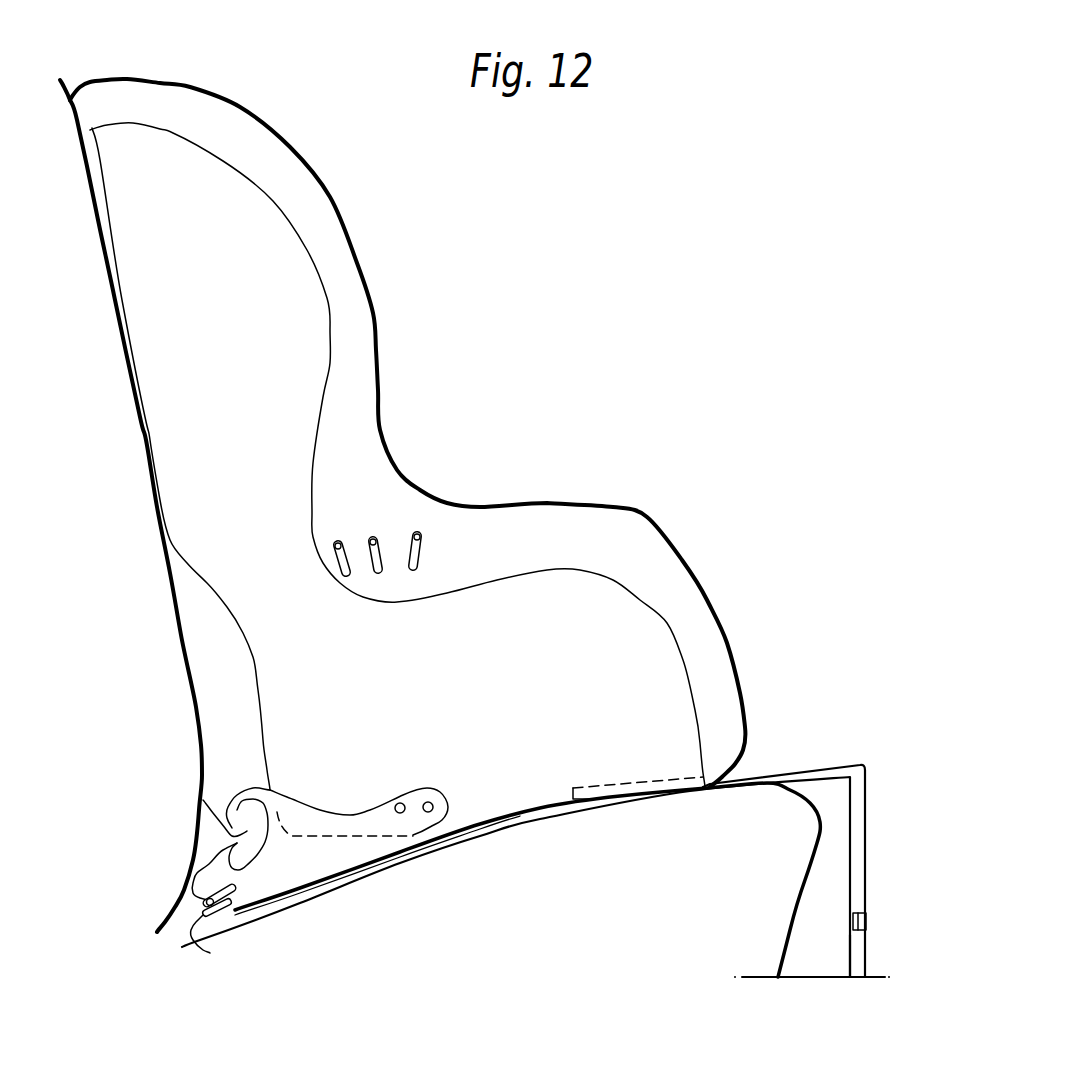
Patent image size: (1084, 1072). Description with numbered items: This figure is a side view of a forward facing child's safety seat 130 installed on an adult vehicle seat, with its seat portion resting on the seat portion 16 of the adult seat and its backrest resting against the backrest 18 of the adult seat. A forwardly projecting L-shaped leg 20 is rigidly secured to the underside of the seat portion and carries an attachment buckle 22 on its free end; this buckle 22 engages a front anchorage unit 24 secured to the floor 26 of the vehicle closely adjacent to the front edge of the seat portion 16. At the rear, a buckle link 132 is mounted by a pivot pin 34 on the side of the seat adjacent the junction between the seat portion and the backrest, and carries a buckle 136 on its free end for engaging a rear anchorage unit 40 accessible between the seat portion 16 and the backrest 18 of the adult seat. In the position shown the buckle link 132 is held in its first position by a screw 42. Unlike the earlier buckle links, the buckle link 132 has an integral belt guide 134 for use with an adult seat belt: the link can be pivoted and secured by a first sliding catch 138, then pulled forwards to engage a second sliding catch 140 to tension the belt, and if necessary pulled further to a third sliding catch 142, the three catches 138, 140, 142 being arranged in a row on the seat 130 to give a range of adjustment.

The seat portion of the adult seat 16 is at (806, 803).
The backrest of the adult seat 18 is at (72, 95).
The L-shaped leg 20 is at (808, 764).
The attachment buckle 22 is at (868, 918).
The front anchorage unit 24 is at (866, 964).
The floor 26 is at (797, 975).
The pivot pin 34 is at (430, 812).
The rear anchorage unit 40 is at (198, 935).
The screw 42 is at (401, 803).
The forward facing seat 130 is at (382, 291).
The buckle link 132 is at (290, 810).
The integral belt guide 134 is at (203, 800).
The buckle 136 is at (231, 907).
The first sliding catch 138 is at (338, 547).
The second sliding catch 140 is at (380, 537).
The third sliding catch 142 is at (420, 533).